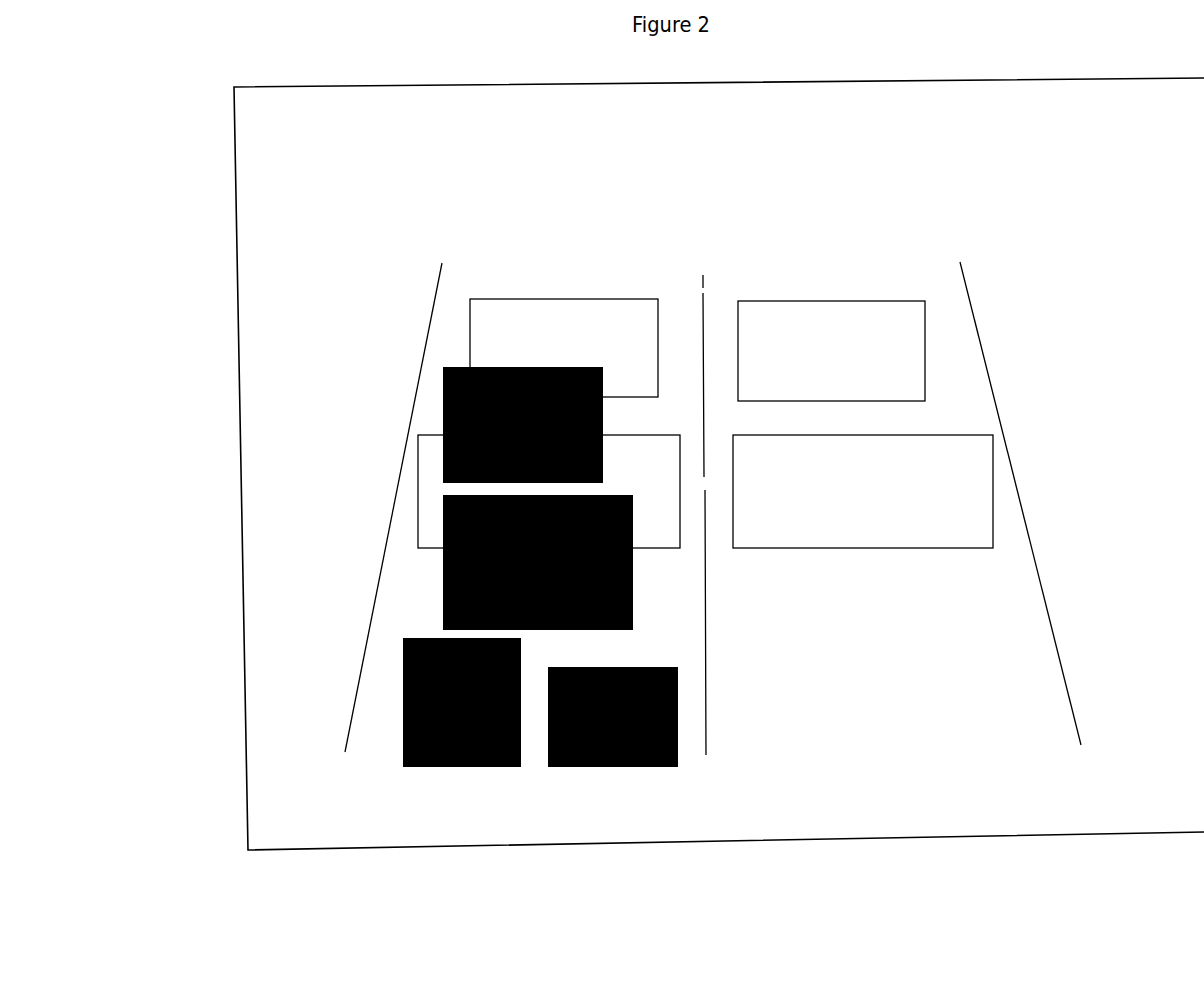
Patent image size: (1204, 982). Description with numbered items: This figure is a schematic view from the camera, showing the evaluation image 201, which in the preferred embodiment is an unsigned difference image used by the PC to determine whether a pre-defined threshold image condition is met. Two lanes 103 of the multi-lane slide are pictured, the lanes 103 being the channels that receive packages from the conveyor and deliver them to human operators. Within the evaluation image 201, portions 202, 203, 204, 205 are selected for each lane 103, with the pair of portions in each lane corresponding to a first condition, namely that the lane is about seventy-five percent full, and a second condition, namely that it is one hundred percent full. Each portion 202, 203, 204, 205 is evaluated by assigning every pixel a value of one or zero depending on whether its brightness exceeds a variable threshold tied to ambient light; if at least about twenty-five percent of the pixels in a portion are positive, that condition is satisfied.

The evaluation image 201 is at (234, 88).
The portion of the evaluation image 202 is at (470, 299).
The portion of the evaluation image 203 is at (418, 435).
The portion of the evaluation image 204 is at (925, 301).
The portion of the evaluation image 205 is at (993, 434).
The lane 103 is at (382, 598).